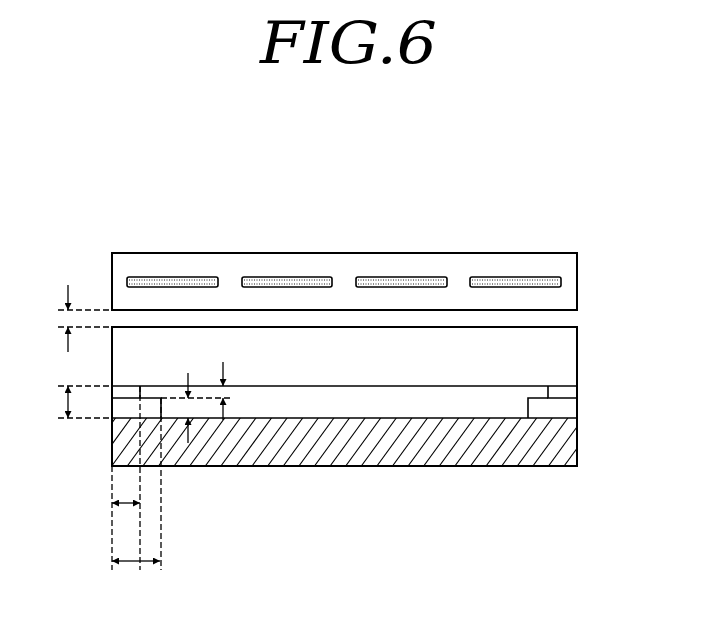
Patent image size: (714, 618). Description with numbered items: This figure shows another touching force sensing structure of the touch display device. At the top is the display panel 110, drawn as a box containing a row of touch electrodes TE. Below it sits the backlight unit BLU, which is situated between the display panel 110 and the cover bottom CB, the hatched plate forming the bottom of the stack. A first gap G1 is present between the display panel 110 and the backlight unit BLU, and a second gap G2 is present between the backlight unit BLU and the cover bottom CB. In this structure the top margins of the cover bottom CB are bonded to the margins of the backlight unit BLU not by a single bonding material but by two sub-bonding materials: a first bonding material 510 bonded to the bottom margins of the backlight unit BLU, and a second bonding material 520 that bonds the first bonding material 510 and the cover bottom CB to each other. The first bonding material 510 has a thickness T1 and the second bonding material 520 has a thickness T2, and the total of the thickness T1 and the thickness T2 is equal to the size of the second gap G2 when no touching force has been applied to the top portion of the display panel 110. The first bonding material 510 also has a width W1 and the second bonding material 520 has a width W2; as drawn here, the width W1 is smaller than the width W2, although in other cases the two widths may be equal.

The display panel 110 is at (523, 257).
The touch electrode TE is at (561, 282).
The backlight unit BLU is at (575, 362).
The first bonding material 510 is at (575, 392).
The second bonding material 520 is at (575, 408).
The cover bottom CB is at (575, 450).
The first gap G1 is at (66, 318).
The second gap G2 is at (66, 402).
The thickness of the first bonding material T1 is at (225, 392).
The thickness of the second bonding material T2 is at (190, 407).
The width of the first bonding material W1 is at (128, 478).
The width of the second bonding material W2 is at (136, 496).